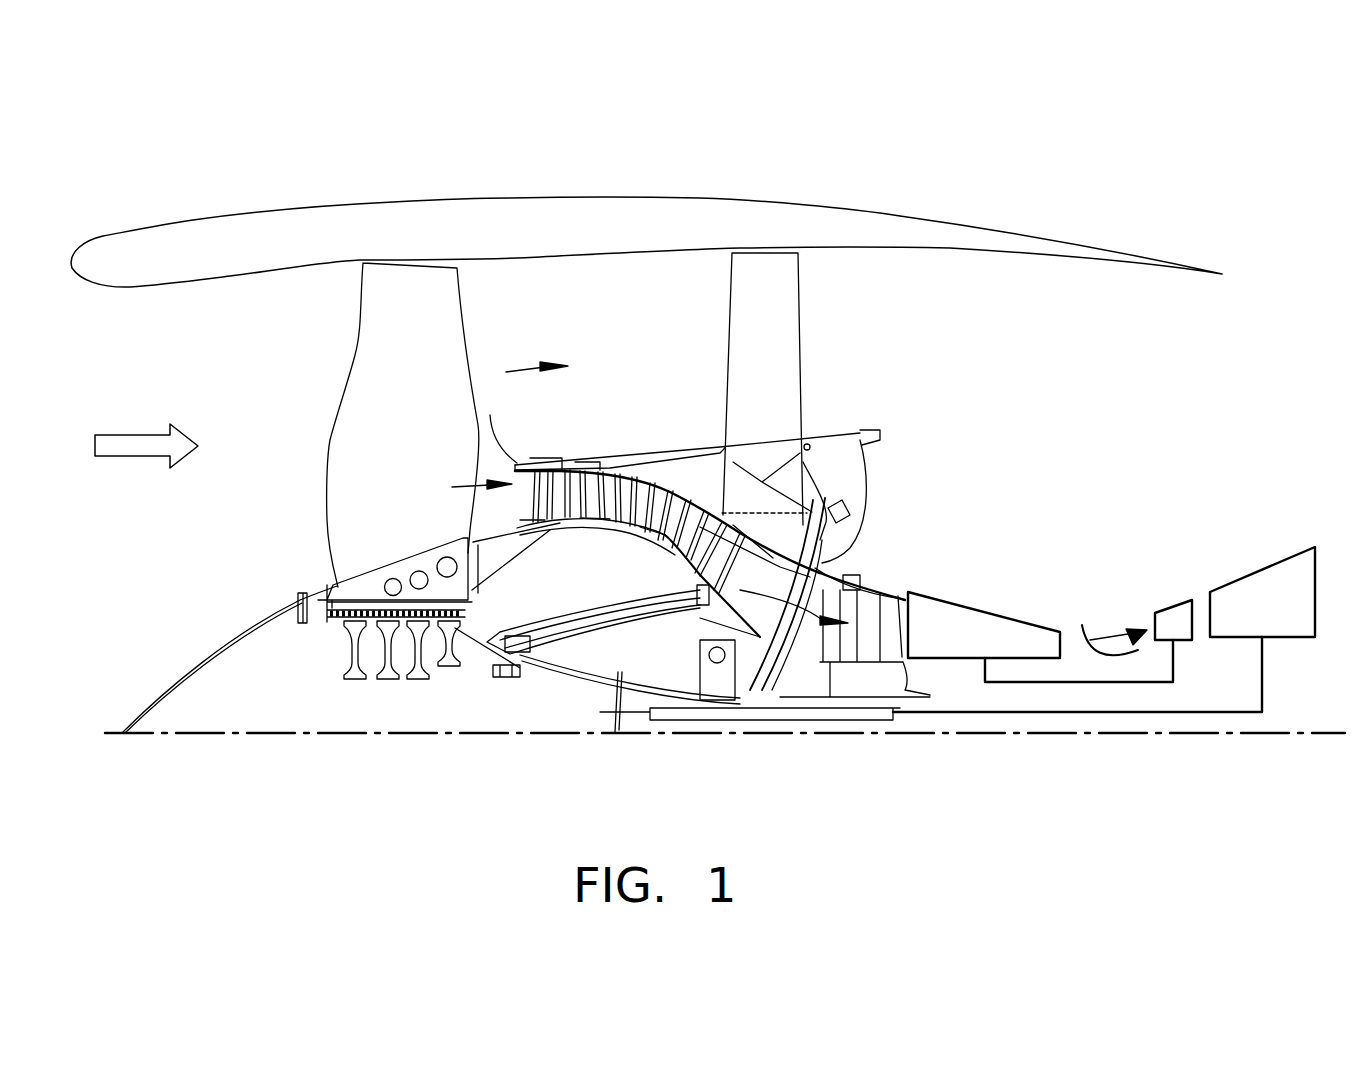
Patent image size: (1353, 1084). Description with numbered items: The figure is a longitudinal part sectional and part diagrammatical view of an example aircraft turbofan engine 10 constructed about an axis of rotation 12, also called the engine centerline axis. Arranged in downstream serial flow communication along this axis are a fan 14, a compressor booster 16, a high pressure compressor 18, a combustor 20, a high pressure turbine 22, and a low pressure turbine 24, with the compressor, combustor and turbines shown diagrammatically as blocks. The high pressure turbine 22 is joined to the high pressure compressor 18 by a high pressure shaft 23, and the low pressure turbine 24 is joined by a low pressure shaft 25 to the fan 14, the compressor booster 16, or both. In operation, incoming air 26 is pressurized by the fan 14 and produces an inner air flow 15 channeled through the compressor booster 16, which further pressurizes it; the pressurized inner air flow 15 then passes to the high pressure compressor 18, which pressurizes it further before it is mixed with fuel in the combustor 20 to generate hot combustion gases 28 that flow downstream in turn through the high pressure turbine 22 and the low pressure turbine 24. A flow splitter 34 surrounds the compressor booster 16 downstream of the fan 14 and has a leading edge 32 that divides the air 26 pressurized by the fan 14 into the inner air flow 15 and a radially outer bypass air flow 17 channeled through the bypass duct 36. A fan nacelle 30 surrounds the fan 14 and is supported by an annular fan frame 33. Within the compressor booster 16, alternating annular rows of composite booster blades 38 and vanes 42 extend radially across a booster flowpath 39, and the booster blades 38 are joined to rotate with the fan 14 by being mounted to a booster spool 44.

The aircraft turbofan engine 10 is at (982, 188).
The axis of rotation 12 is at (1153, 733).
The fan 14 is at (394, 436).
The inner air flow 15 is at (470, 482).
The compressor booster 16 is at (553, 585).
The bypass air flow 17 is at (526, 370).
The high pressure compressor 18 is at (945, 644).
The combustor 20 is at (1102, 618).
The high pressure turbine 22 is at (1163, 613).
The low pressure turbine 24 is at (1235, 621).
The high pressure shaft 23 is at (1090, 680).
The low pressure shaft 25 is at (968, 712).
The air 26 is at (142, 458).
The hot combustion gases 28 is at (1108, 638).
The fan nacelle 30 is at (413, 233).
The leading edge 32 is at (490, 430).
The annular fan frame 33 is at (748, 441).
The flow splitter 34 is at (601, 455).
The bypass duct 36 is at (582, 322).
The composite booster blades 38 is at (556, 512).
The booster flowpath 39 is at (540, 491).
The vanes 42 is at (584, 488).
The booster spool 44 is at (553, 512).